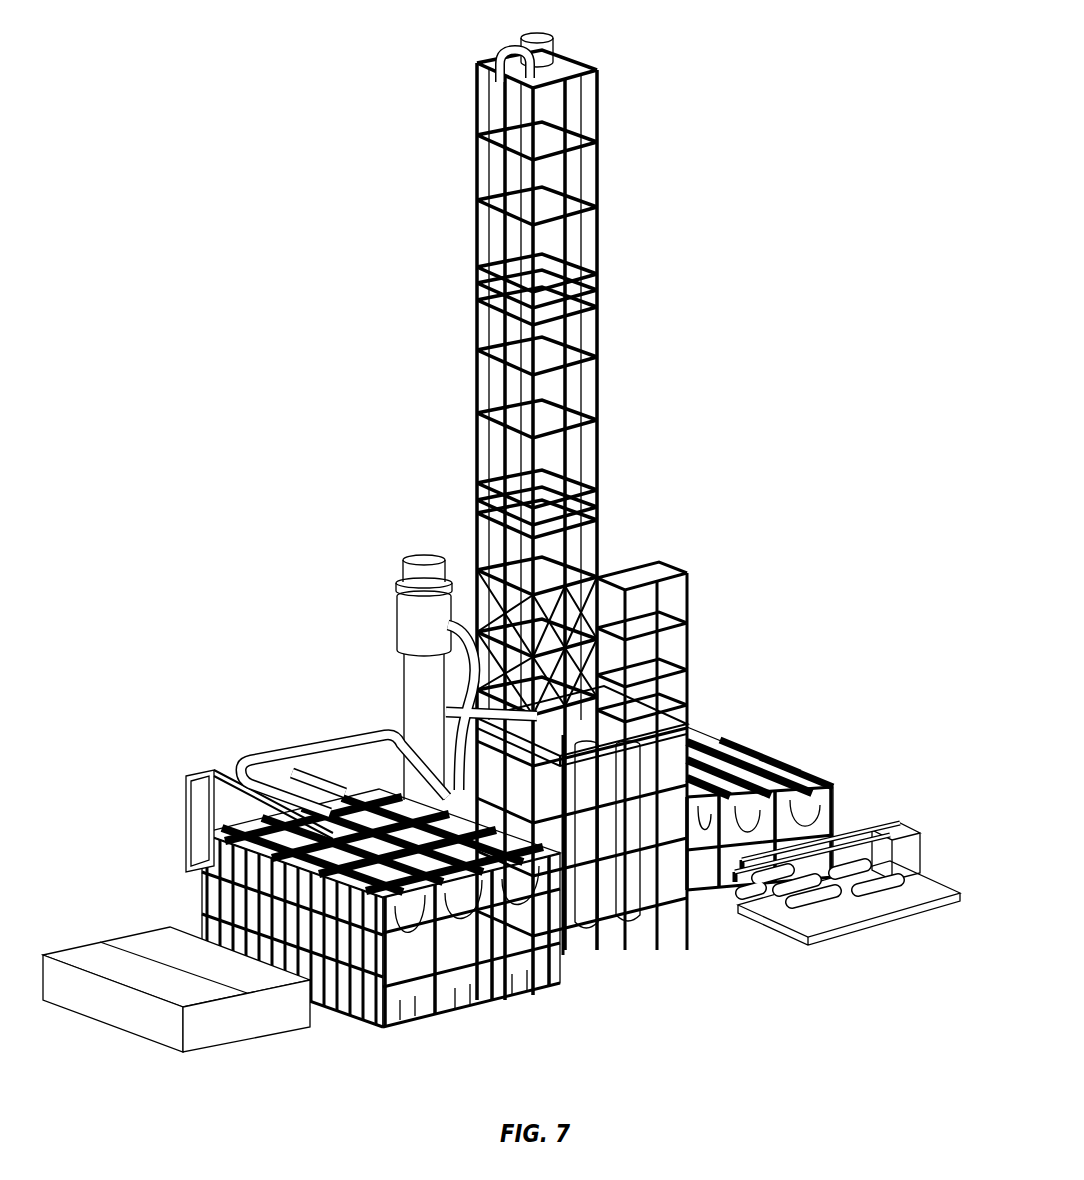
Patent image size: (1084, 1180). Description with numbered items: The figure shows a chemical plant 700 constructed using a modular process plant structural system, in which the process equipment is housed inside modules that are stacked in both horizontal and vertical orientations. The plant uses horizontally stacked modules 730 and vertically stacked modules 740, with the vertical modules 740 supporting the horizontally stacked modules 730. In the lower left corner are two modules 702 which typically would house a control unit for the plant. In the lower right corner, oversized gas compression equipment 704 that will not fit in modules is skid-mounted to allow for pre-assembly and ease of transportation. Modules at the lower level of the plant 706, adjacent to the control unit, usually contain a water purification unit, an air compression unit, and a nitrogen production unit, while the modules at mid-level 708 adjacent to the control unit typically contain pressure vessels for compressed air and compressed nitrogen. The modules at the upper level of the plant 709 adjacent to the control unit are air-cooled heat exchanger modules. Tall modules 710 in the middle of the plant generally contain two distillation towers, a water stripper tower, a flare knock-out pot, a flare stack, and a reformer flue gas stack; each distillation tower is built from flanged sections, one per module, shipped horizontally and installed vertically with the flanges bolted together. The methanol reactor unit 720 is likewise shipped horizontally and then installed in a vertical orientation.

The chemical plant 700 is at (805, 66).
The modules housing a control unit 702 is at (232, 1048).
The skid-mounted gas compression equipment 704 is at (887, 920).
The lower level modules 706 is at (371, 1033).
The mid-level modules 708 is at (197, 893).
The upper level modules 709 is at (183, 840).
The tall modules 710 is at (600, 245).
The methanol reactor unit 720 is at (637, 850).
The horizontally stacked modules 730 is at (695, 620).
The vertically stacked modules 740 is at (678, 752).